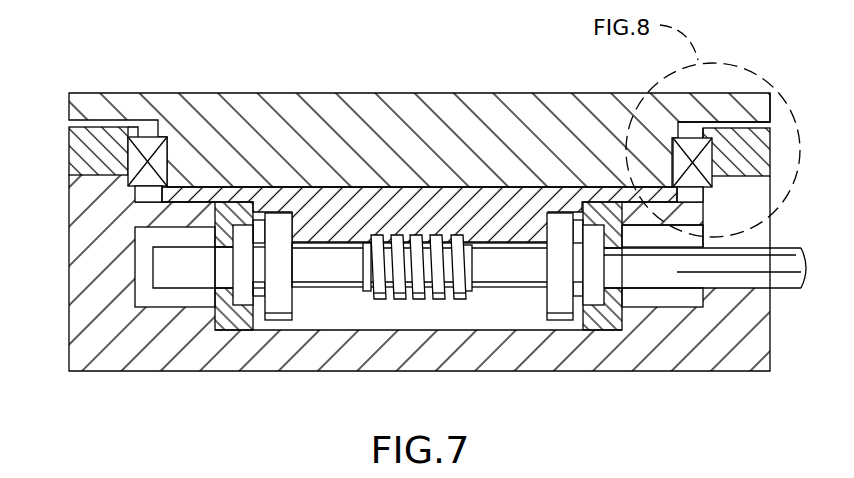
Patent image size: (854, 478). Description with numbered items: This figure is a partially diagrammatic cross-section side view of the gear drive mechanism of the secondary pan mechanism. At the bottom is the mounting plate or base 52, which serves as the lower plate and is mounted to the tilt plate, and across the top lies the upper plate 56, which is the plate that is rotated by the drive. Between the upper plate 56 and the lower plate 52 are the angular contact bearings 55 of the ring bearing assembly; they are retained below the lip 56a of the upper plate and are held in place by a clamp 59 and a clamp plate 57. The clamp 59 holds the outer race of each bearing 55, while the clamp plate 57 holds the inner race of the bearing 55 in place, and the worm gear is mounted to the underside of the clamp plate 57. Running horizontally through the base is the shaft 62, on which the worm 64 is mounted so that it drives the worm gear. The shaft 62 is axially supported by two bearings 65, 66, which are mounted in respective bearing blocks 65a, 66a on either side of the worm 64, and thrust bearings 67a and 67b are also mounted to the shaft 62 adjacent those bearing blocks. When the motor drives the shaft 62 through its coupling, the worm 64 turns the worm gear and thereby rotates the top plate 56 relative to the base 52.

The mounting plate or base 52 is at (100, 290).
The angular contact bearing 55 is at (147, 148).
The upper plate 56 is at (424, 124).
The lip 56a is at (757, 108).
The clamp plate 57 is at (325, 220).
The clamp 59 is at (103, 150).
The shaft 62 is at (488, 263).
The worm 64 is at (418, 300).
The bearing 65 is at (596, 261).
The bearing block 65a is at (598, 315).
The bearing 66 is at (245, 259).
The bearing block 66a is at (233, 323).
The thrust bearing 67a is at (557, 321).
The thrust bearing 67b is at (276, 321).